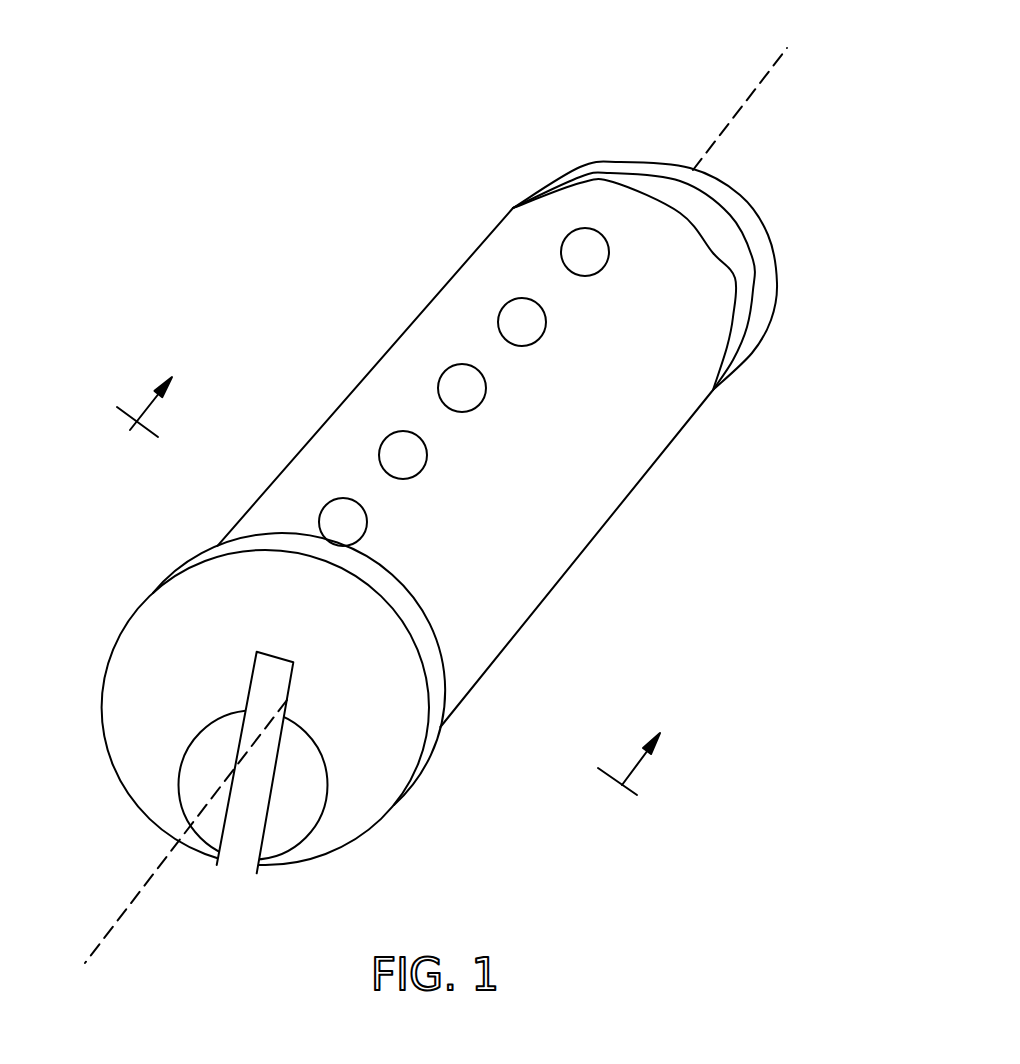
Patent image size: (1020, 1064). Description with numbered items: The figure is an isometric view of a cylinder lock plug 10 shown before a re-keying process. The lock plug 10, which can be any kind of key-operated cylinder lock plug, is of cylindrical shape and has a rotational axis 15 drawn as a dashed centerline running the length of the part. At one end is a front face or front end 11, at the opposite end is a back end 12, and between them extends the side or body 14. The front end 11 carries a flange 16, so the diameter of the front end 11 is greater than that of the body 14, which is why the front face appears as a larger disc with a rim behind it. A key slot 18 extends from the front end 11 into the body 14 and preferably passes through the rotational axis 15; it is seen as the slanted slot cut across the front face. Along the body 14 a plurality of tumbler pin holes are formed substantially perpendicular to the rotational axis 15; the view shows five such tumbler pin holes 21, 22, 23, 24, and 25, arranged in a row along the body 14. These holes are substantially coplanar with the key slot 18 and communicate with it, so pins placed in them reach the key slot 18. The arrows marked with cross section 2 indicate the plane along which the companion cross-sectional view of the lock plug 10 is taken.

The cylinder lock plug 10 is at (687, 845).
The front end 11 is at (132, 740).
The back end 12 is at (762, 288).
The body 14 is at (505, 545).
The rotational axis 15 is at (433, 505).
The flange 16 is at (428, 655).
The key slot 18 is at (257, 767).
The tumbler pin hole 21 is at (320, 521).
The tumbler pin hole 22 is at (379, 453).
The tumbler pin hole 23 is at (438, 386).
The tumbler pin hole 24 is at (498, 320).
The tumbler pin hole 25 is at (562, 243).
The cross section 2— 2 is at (391, 583).